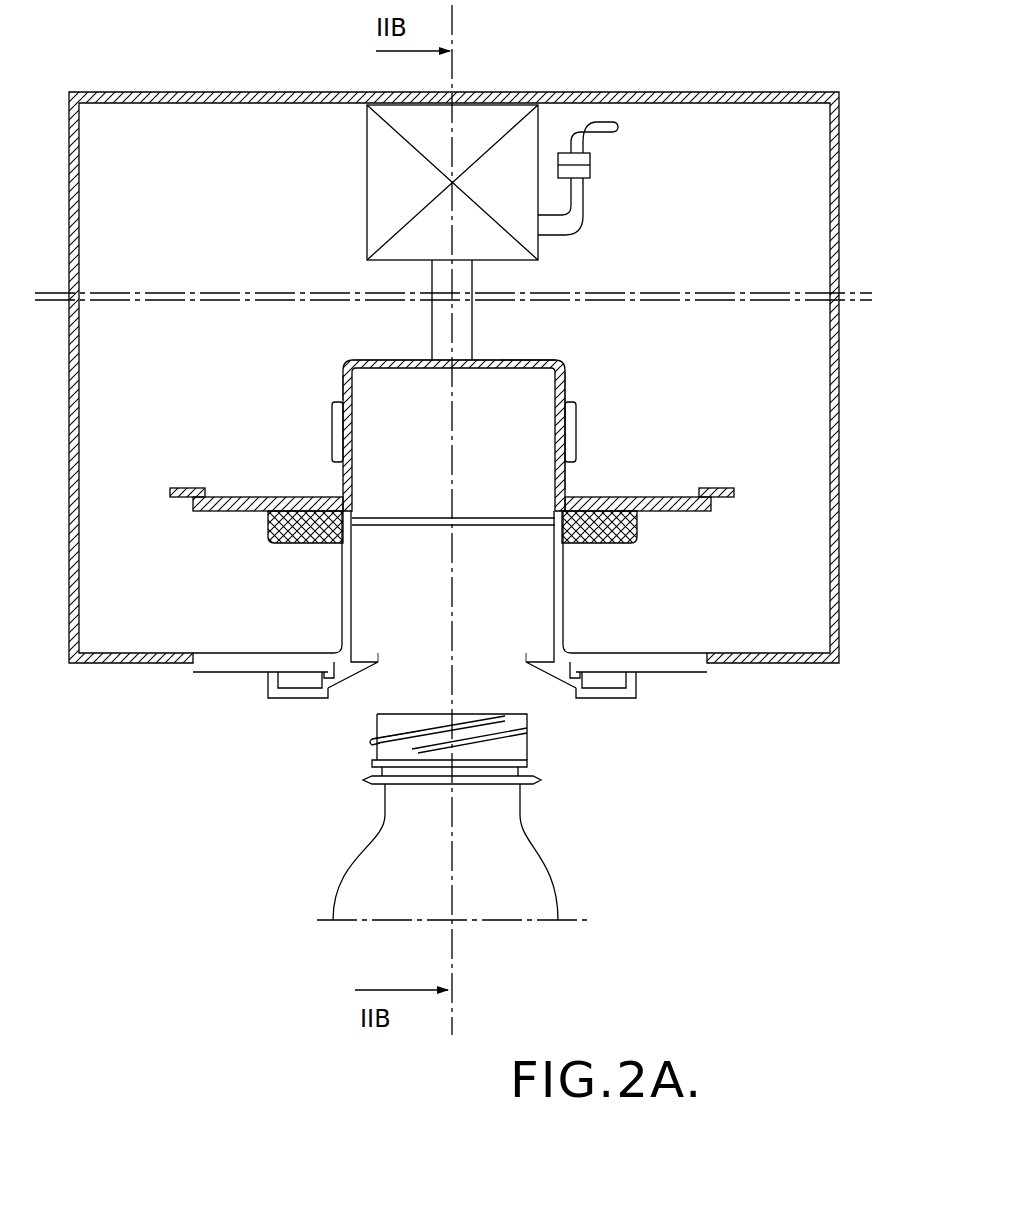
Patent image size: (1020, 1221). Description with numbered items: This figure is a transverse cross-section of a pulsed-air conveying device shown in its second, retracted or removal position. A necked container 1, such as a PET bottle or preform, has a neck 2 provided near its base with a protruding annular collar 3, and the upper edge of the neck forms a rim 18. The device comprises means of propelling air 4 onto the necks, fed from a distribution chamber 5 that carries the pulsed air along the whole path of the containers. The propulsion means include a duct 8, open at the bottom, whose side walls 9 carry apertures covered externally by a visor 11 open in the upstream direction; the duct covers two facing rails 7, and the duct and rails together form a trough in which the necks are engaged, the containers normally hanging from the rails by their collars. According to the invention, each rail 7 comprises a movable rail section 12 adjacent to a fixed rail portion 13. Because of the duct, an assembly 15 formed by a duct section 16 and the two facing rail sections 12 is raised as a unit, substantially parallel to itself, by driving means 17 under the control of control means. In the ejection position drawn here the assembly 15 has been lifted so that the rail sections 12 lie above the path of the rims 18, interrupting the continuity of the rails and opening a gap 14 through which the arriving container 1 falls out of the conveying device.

The container 1 is at (358, 834).
The neck 2 is at (508, 748).
The annular collar 3 is at (536, 781).
The means of propelling air 4 is at (587, 392).
The distribution chamber 5 is at (716, 210).
The rail 7 is at (266, 686).
The duct 8 is at (371, 359).
The side wall 9 is at (344, 388).
The visor 11 is at (334, 428).
The movable rail section 12 is at (334, 541).
The fixed rail portion 13 is at (305, 678).
The gap 14 is at (492, 675).
The assembly 15 is at (541, 359).
The duct section 16 is at (569, 364).
The driving means 17 is at (490, 122).
The rim 18 is at (418, 714).